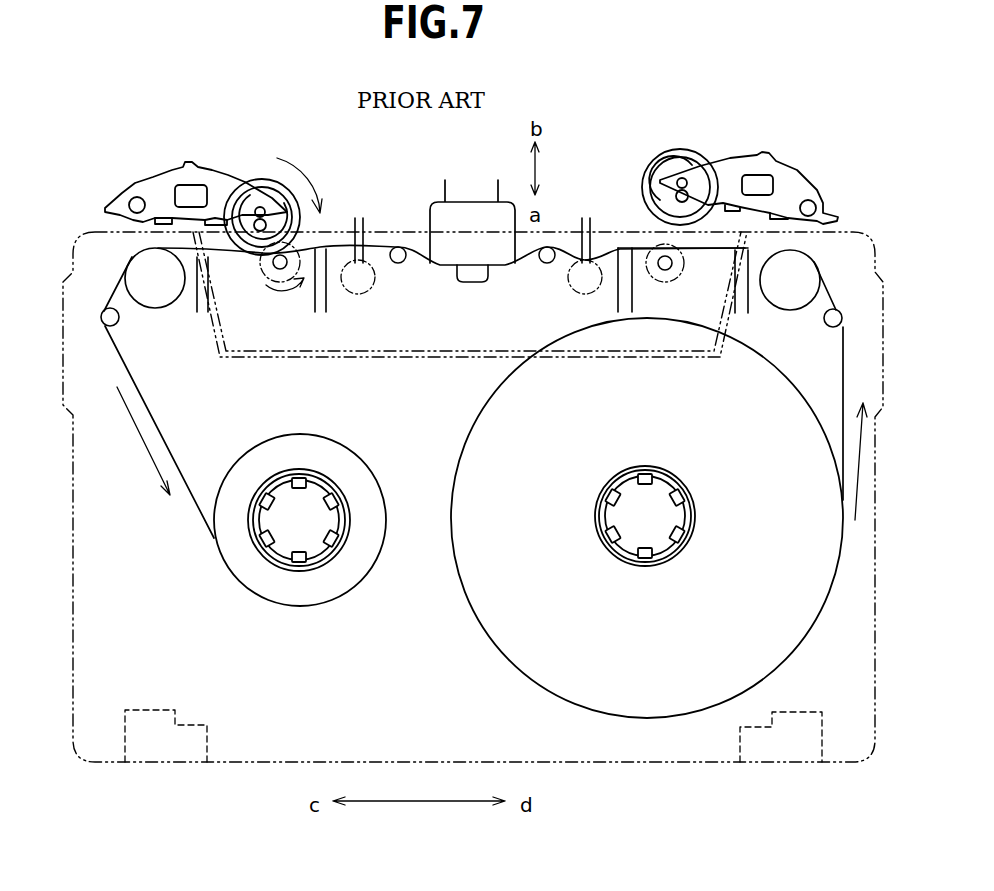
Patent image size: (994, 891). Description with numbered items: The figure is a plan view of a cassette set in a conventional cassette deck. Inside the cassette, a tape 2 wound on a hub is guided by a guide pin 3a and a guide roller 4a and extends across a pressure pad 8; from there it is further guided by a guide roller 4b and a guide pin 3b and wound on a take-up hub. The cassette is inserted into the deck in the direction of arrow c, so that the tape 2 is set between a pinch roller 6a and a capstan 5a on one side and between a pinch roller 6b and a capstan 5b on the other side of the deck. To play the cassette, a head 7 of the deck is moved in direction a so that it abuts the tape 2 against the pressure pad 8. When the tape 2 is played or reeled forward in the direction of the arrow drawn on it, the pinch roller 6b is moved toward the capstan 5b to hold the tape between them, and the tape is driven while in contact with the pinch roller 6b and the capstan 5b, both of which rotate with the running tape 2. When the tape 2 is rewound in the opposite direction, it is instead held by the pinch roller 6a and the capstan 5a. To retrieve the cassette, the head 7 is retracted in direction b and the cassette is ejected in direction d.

The tape 2 is at (167, 442).
The guide pin 3a is at (825, 322).
The guide pin 3b is at (120, 326).
The guide roller 4a is at (803, 272).
The guide roller 4b is at (163, 292).
The capstan 5a is at (668, 270).
The capstan 5b is at (270, 272).
The pinch roller 6a is at (685, 150).
The pinch roller 6b is at (262, 178).
The head 7 is at (430, 215).
The pressure pad 8 is at (470, 283).